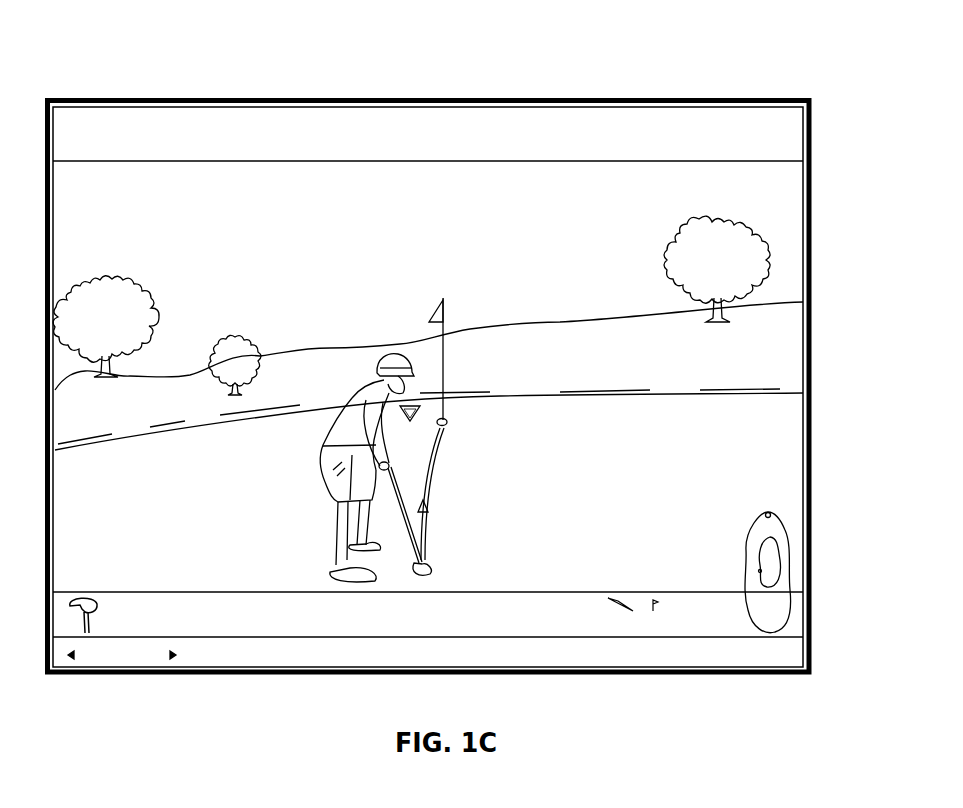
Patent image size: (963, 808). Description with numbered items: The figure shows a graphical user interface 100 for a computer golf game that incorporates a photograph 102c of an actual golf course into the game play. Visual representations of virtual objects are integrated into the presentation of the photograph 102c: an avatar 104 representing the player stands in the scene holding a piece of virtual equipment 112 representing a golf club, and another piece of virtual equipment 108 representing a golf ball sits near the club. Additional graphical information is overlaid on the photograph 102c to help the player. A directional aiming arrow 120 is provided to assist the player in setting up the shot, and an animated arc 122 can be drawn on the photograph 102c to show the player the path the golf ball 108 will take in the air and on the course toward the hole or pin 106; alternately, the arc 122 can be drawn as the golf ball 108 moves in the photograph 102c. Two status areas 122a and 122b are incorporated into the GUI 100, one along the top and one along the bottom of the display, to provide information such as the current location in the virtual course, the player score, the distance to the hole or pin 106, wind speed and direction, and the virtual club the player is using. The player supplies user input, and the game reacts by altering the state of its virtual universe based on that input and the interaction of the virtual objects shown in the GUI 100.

The graphical user interface 100 is at (110, 88).
The status area 122a is at (820, 105).
The status area 122b is at (820, 578).
The avatar 104 is at (316, 447).
The hole or pin 106 is at (452, 425).
The golf ball 108 is at (438, 570).
The golf club 112 is at (398, 497).
The directional aiming arrow 120 is at (432, 530).
The animated arc 122 is at (437, 446).
The photograph 102c is at (732, 559).